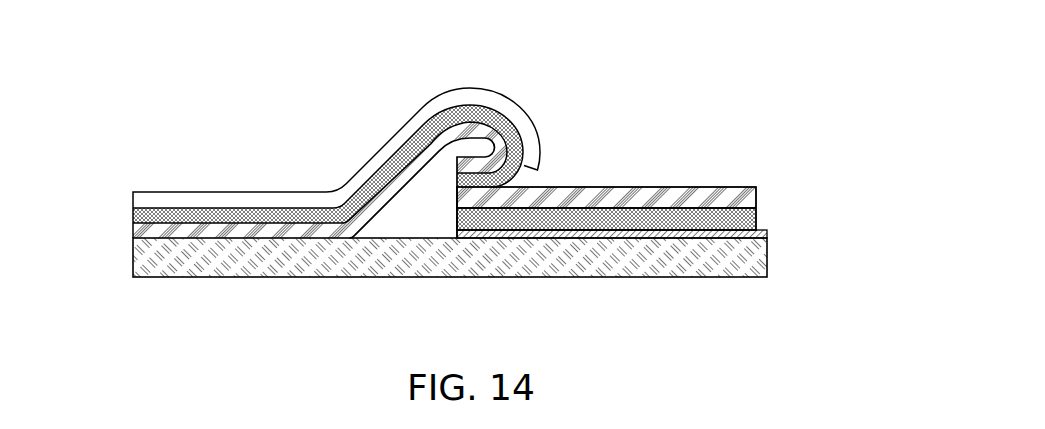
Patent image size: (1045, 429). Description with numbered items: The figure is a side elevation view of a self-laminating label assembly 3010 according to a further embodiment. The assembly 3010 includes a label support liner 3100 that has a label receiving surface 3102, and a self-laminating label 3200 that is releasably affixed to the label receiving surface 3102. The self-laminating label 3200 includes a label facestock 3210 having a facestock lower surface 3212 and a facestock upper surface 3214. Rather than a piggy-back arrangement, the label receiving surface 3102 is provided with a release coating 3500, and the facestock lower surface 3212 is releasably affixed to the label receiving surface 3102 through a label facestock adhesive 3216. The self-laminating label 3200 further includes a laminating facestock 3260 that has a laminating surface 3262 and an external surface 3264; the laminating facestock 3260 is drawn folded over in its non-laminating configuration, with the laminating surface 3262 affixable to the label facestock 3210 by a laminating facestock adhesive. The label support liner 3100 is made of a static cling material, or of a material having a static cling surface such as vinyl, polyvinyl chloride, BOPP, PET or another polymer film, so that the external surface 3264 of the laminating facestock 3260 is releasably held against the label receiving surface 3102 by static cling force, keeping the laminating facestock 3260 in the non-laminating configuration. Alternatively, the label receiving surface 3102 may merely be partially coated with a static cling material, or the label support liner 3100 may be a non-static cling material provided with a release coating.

The self-laminating label assembly 3010 is at (442, 172).
The self-laminating label 3200 is at (375, 176).
The label support liner 3100 is at (648, 262).
The label receiving surface 3102 is at (148, 230).
The laminating facestock 3260 is at (233, 231).
The laminating surface 3262 is at (280, 223).
The external surface 3264 is at (328, 238).
The label facestock 3210 is at (652, 228).
The facestock lower surface 3212 is at (733, 208).
The facestock upper surface 3214 is at (667, 187).
The label facestock adhesive 3216 is at (552, 218).
The release coating 3500 is at (735, 233).